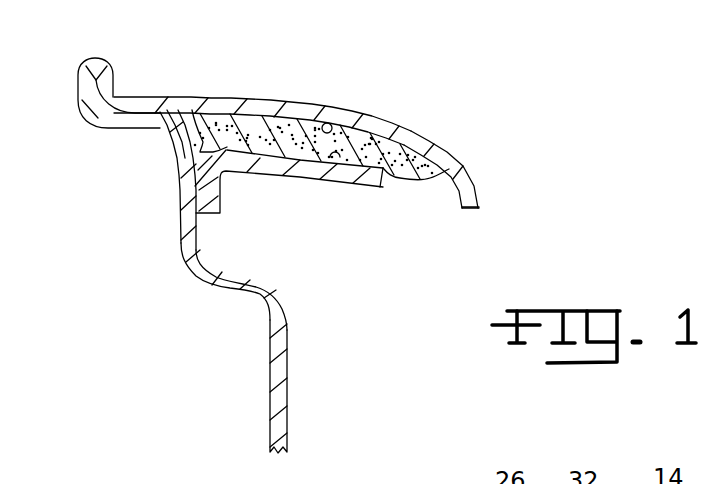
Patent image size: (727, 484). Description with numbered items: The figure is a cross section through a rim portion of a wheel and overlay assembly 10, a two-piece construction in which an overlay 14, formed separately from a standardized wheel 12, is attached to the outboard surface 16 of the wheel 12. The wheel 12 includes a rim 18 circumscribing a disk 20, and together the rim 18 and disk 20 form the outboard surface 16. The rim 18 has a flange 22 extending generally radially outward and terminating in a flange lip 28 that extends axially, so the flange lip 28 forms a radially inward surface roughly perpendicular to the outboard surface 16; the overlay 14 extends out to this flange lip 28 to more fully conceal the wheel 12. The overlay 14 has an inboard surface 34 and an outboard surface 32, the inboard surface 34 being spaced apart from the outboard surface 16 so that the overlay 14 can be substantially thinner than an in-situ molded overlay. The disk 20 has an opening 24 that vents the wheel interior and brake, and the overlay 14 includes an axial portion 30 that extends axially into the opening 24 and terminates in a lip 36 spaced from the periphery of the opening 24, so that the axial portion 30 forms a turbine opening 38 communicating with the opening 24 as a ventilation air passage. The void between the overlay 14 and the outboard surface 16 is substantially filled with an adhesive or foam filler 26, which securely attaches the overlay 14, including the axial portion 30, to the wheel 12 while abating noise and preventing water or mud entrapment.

The wheel and overlay assembly 10 is at (492, 100).
The wheel 12 is at (254, 352).
The overlay 14 is at (237, 86).
The outboard surface 16 is at (327, 160).
The rim 18 is at (222, 289).
The disk 20 is at (294, 177).
The flange 22 is at (165, 124).
The opening 24 is at (384, 186).
The adhesive or foam filler 26 is at (239, 150).
The flange lip 28 is at (80, 86).
The axial portion 30 is at (461, 172).
The outboard surface of the overlay 32 is at (310, 100).
The inboard surface of the overlay 34 is at (332, 126).
The lip 36 is at (472, 210).
The turbine opening 38 is at (479, 209).